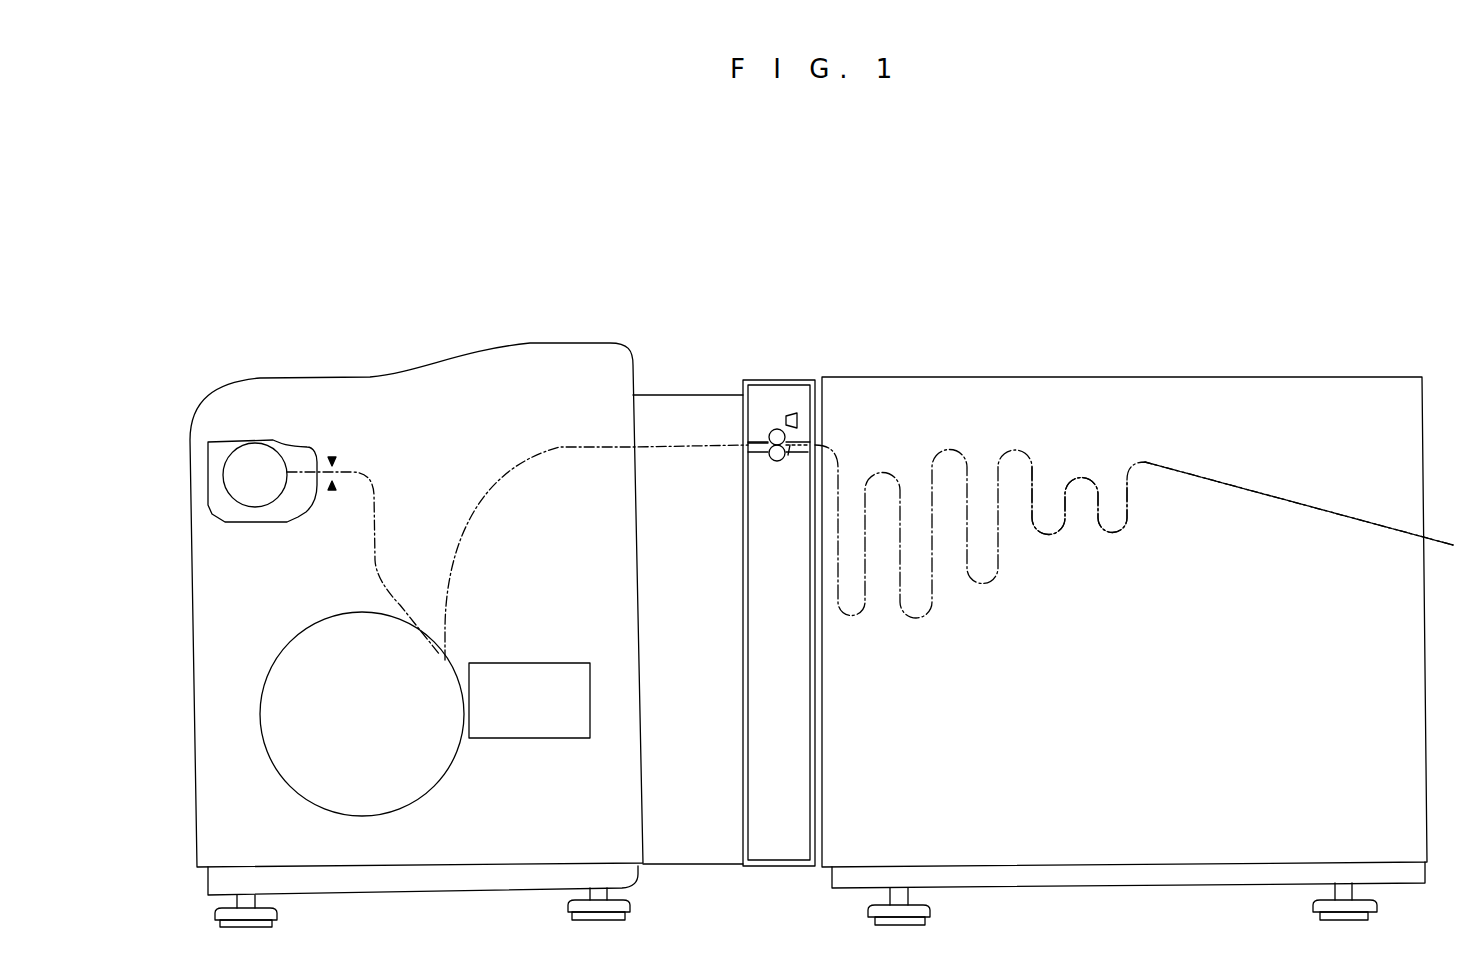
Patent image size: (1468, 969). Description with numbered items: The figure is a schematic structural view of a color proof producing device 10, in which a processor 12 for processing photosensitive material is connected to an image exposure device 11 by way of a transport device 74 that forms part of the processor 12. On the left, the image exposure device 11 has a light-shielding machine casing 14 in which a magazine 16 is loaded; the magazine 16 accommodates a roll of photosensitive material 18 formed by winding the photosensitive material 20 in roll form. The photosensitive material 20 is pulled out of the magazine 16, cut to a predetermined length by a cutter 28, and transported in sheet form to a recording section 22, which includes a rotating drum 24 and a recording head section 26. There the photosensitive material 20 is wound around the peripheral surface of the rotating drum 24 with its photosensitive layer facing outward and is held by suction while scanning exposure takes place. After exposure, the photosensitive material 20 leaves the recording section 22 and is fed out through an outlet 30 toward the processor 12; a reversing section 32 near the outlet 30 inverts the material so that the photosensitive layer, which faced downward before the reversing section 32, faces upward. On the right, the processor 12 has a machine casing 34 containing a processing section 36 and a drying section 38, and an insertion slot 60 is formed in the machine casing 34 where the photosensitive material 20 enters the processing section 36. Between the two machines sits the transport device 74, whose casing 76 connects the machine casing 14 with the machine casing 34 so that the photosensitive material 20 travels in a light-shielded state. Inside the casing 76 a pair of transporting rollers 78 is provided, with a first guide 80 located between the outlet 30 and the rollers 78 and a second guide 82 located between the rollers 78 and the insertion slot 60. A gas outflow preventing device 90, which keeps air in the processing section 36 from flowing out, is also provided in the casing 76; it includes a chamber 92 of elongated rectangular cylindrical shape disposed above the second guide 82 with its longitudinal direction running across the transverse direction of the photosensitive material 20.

The color proof producing device 10 is at (896, 228).
The image exposure device 11 is at (512, 318).
The processor 12 is at (1258, 345).
The machine casing 14 is at (356, 377).
The magazine 16 is at (233, 440).
The roll of photosensitive material 18 is at (222, 478).
The photosensitive material 20 is at (378, 495).
The recording section 22 is at (280, 585).
The rotating drum 24 is at (292, 658).
The recording head section 26 is at (552, 670).
The cutter 28 is at (343, 452).
The outlet 30 is at (760, 443).
The reversing section 32 is at (685, 412).
The machine casing 34 is at (1052, 377).
The processing section 36 is at (1100, 410).
The drying section 38 is at (1320, 450).
The insertion slot 60 is at (812, 440).
The transport device 74 is at (773, 400).
The casing 76 is at (755, 380).
The pair of transporting rollers 78 is at (781, 460).
The first guide 80 is at (765, 453).
The second guide 82 is at (793, 458).
The gas outflow preventing device 90 is at (797, 402).
The chamber 92 is at (800, 420).